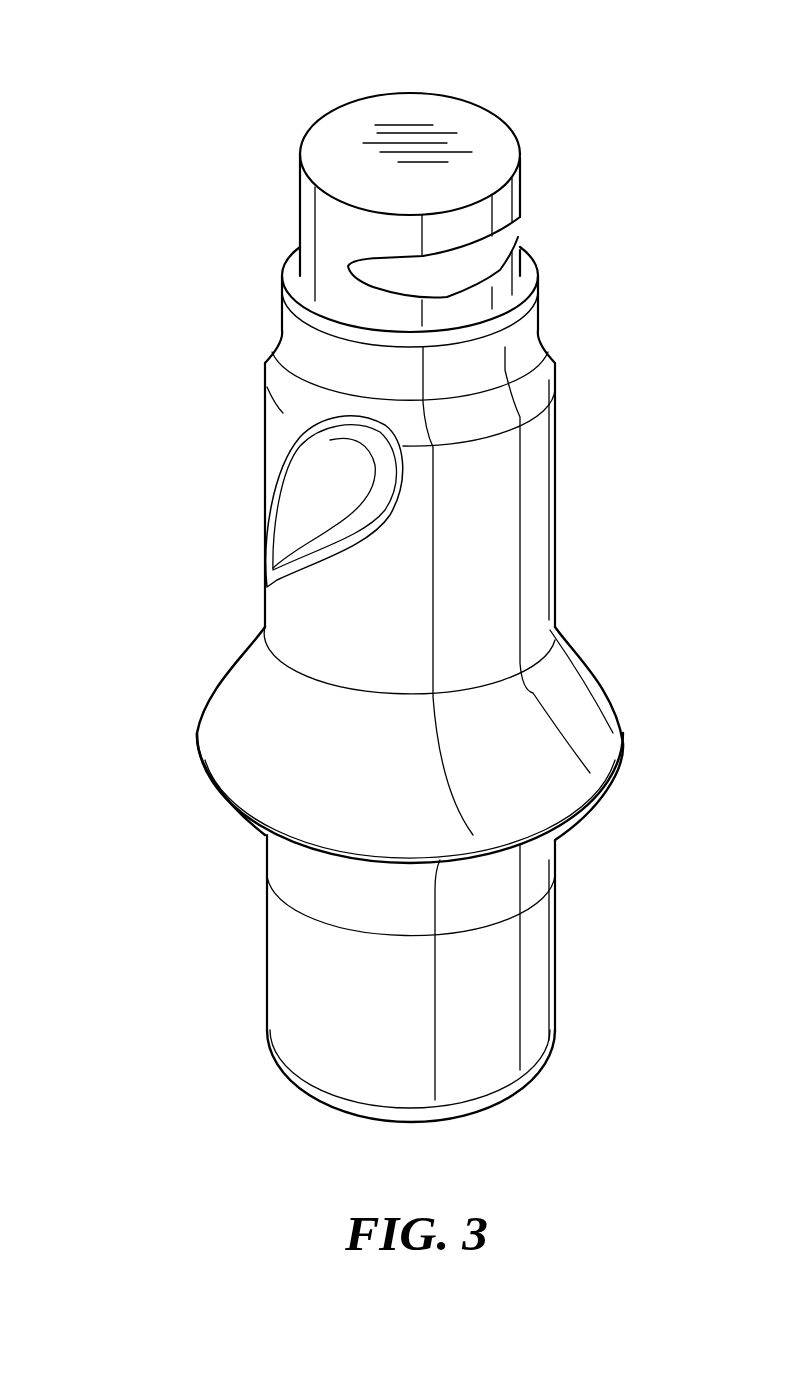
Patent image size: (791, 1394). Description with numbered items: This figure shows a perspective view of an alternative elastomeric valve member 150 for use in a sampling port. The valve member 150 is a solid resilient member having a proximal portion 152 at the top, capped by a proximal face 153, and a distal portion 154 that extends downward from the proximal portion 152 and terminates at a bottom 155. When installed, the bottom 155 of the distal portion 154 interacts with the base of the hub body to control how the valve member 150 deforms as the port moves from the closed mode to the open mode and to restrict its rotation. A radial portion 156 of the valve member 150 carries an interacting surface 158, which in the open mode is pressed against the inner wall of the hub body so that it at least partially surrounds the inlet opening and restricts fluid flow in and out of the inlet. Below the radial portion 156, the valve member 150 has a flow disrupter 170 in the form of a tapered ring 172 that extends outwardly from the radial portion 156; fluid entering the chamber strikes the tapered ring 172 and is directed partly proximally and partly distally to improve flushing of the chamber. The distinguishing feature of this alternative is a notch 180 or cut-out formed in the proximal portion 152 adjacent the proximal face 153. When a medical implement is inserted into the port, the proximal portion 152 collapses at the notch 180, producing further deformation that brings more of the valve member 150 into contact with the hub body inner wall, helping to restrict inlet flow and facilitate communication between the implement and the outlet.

The valve member 150 is at (175, 100).
The proximal portion 152 is at (323, 220).
The proximal face 153 is at (470, 117).
The distal portion 154 is at (531, 503).
The bottom of the distal portion 155 is at (302, 1092).
The radial portion 156 is at (275, 422).
The interacting surface 158 is at (303, 518).
The flow disrupter 170 is at (242, 692).
The tapered ring 172 is at (207, 778).
The notch 180 is at (493, 243).